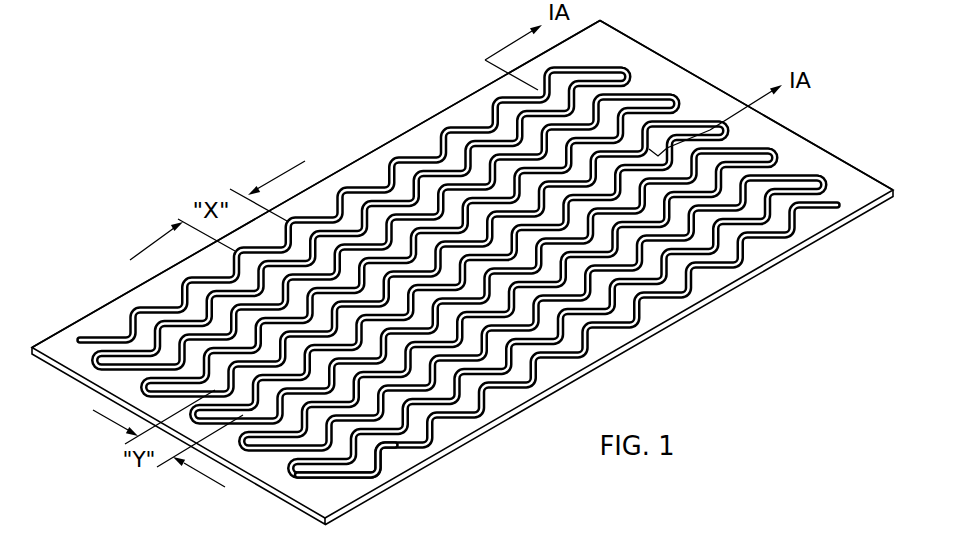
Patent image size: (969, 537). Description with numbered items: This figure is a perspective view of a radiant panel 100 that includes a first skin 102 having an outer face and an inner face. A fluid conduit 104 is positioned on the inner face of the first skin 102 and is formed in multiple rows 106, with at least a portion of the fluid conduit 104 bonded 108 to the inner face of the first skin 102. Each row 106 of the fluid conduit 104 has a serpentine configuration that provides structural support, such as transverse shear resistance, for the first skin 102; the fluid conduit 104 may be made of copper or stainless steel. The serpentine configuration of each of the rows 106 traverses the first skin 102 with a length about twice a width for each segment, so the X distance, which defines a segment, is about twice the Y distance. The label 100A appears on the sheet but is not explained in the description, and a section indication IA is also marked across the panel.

The radiant panel 100 is at (301, 91).
The plate assembly detail reference 100A is at (741, 534).
The first skin 102 is at (683, 63).
The fluid conduit 104 is at (92, 337).
The rows 106 is at (417, 153).
The bonded portion 108 is at (380, 466).